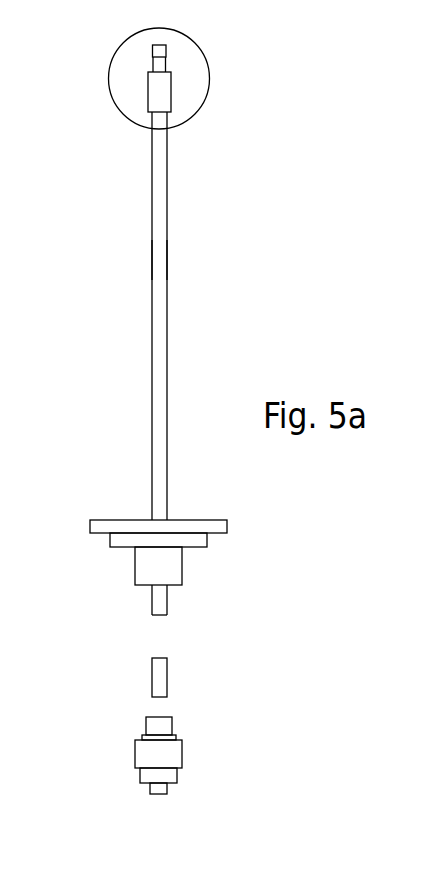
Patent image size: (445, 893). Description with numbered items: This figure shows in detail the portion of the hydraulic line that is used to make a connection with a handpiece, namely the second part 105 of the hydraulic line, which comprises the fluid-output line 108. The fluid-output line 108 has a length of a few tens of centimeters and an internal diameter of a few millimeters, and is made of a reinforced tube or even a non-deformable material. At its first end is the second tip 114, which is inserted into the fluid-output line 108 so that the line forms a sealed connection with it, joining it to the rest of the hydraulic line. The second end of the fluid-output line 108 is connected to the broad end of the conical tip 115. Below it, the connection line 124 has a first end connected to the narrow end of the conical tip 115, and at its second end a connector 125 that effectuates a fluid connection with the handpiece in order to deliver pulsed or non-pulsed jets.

The second part 105 is at (152, 288).
The fluid-output line 108 is at (158, 262).
The second tip 114 is at (172, 88).
The conical tip 115 is at (182, 560).
The connection line 124 is at (150, 677).
The connector 125 is at (187, 755).